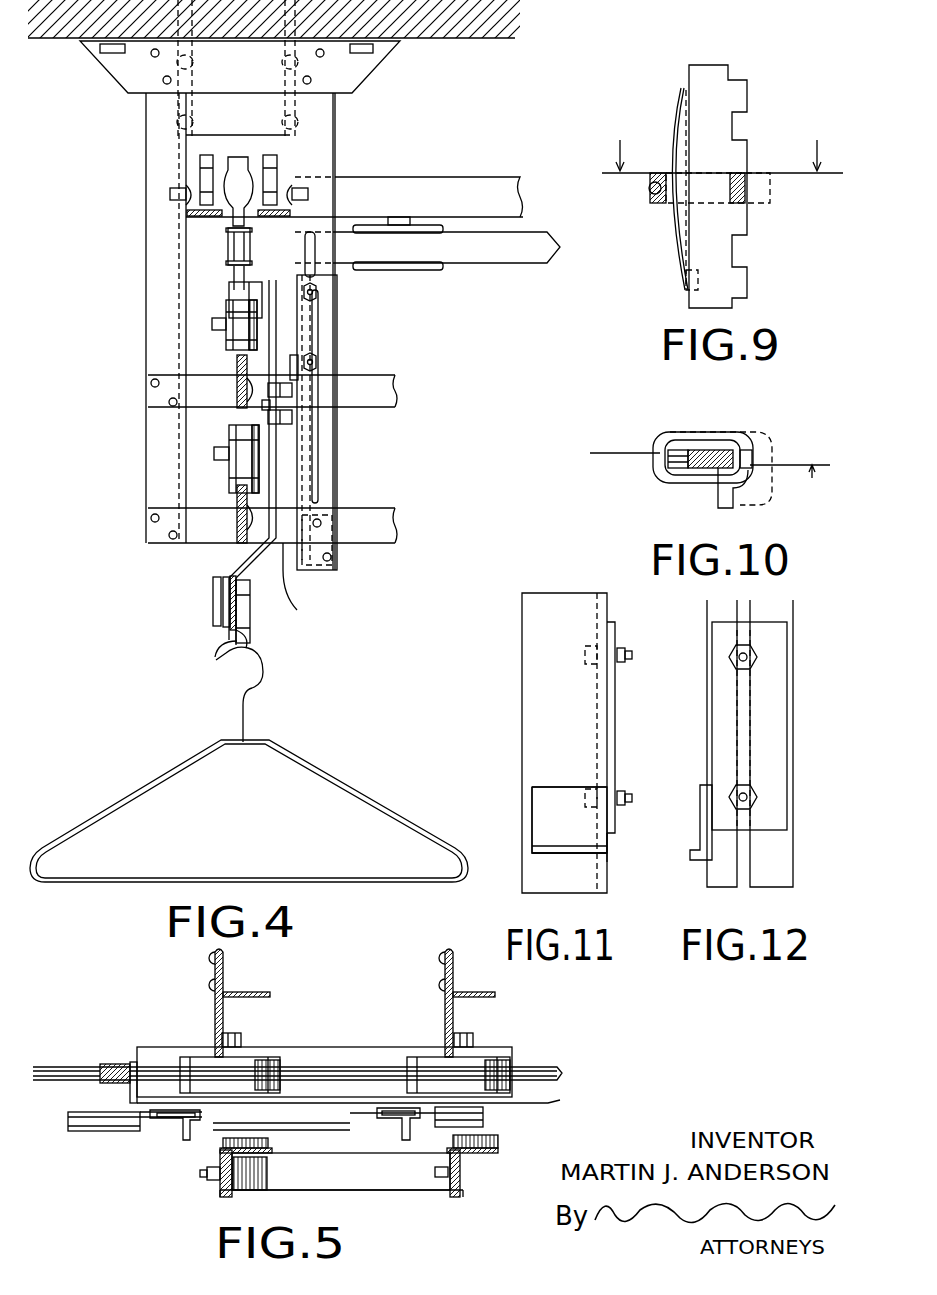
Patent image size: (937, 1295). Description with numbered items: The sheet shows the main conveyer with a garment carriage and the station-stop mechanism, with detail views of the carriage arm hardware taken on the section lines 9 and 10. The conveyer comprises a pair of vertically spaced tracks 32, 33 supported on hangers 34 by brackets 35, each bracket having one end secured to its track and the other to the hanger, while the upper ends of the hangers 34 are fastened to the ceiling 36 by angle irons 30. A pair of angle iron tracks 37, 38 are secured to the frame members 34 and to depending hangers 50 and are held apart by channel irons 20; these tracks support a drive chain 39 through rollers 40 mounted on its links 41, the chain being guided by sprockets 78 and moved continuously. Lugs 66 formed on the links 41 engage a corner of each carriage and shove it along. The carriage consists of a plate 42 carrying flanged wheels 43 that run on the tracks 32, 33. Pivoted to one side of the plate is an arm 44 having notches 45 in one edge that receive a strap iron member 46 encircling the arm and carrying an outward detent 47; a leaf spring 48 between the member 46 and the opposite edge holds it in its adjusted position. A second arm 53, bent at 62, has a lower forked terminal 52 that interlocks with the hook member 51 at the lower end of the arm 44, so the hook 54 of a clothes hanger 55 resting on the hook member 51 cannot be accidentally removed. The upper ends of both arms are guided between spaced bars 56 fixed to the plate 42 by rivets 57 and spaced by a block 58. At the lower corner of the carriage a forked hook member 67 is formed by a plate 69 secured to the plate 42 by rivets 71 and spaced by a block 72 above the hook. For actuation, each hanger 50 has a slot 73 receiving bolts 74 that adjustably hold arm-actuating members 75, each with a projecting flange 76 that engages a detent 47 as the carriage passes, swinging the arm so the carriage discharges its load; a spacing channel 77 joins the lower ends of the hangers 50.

In FIG. 4, the channel irons 20 is at (265, 104).
In FIG. 4, the angle irons 30 is at (118, 70).
In FIG. 4, the track 32 is at (237, 400).
In FIG. 4, the track 33 is at (237, 505).
In FIG. 5, the track 33 is at (48, 1065).
In FIG. 4, the hangers 34 is at (160, 443).
In FIG. 5, the hangers 34 is at (225, 970).
In FIG. 4, the brackets 35 is at (150, 383).
In FIG. 5, the brackets 35 is at (213, 1005).
In FIG. 4, the ceiling 36 is at (40, 41).
In FIG. 4, the track 37 is at (205, 218).
In FIG. 4, the track 38 is at (485, 188).
In FIG. 4, the drive chain 39 is at (234, 247).
In FIG. 4, the rollers 40 is at (205, 165).
In FIG. 4, the links 41 is at (238, 163).
In FIG. 5, the plate 42 is at (548, 1103).
In FIG. 4, the flanged wheels 43 is at (228, 344).
In FIG. 5, the flanged wheels 43 is at (268, 1060).
In FIG. 9, the arm 44 is at (718, 97).
In FIG. 10, the arm 44 is at (710, 452).
In FIG. 5, the arm 44 is at (397, 1117).
In FIG. 9, the notches 45 is at (735, 117).
In FIG. 4, the member 46 is at (264, 415).
In FIG. 9, the member 46 is at (655, 195).
In FIG. 10, the member 46 is at (666, 460).
In FIG. 5, the member 46 is at (162, 1123).
In FIG. 4, the detent 47 is at (292, 388).
In FIG. 10, the detent 47 is at (735, 498).
In FIG. 5, the detent 47 is at (185, 1135).
In FIG. 9, the leaf spring 48 is at (675, 138).
In FIG. 10, the leaf spring 48 is at (668, 468).
In FIG. 4, the hangers 50 is at (328, 148).
In FIG. 11, the hangers 50 is at (545, 727).
In FIG. 12, the hangers 50 is at (785, 867).
In FIG. 5, the hangers 50 is at (235, 1195).
In FIG. 4, the hook member 51 is at (258, 674).
In FIG. 4, the forked terminal 52 is at (252, 633).
In FIG. 4, the arm 53 is at (272, 470).
In FIG. 5, the arm 53 is at (175, 1125).
In FIG. 4, the hook 54 is at (253, 674).
In FIG. 4, the clothes hanger 55 is at (333, 778).
In FIG. 5, the bars 56 is at (95, 1112).
In FIG. 5, the rivets 57 is at (75, 1135).
In FIG. 5, the spacing block 58 is at (72, 1122).
In FIG. 4, the bend 62 is at (297, 600).
In FIG. 5, the lugs 66 is at (112, 1063).
In FIG. 4, the hook member 67 is at (240, 633).
In FIG. 4, the plate 69 is at (223, 613).
In FIG. 4, the rivets 71 is at (213, 586).
In FIG. 4, the block 72 is at (230, 578).
In FIG. 4, the slot 73 is at (316, 462).
In FIG. 12, the slot 73 is at (752, 853).
In FIG. 4, the bolts 74 is at (315, 292).
In FIG. 11, the bolts 74 is at (632, 655).
In FIG. 12, the bolts 74 is at (757, 658).
In FIG. 5, the bolts 74 is at (205, 1175).
In FIG. 4, the arm-actuating members 75 is at (336, 318).
In FIG. 11, the arm-actuating members 75 is at (545, 807).
In FIG. 12, the arm-actuating members 75 is at (722, 722).
In FIG. 5, the arm-actuating members 75 is at (225, 1195).
In FIG. 11, the flange 76 is at (548, 858).
In FIG. 12, the flange 76 is at (692, 858).
In FIG. 5, the flange 76 is at (225, 1150).
In FIG. 5, the spacing channel 77 is at (398, 1190).
In FIG. 4, the sprockets 78 is at (498, 265).
In FIG. 10, the section line 9- 9 is at (704, 461).
In FIG. 9, the section line 10- 10 is at (710, 170).